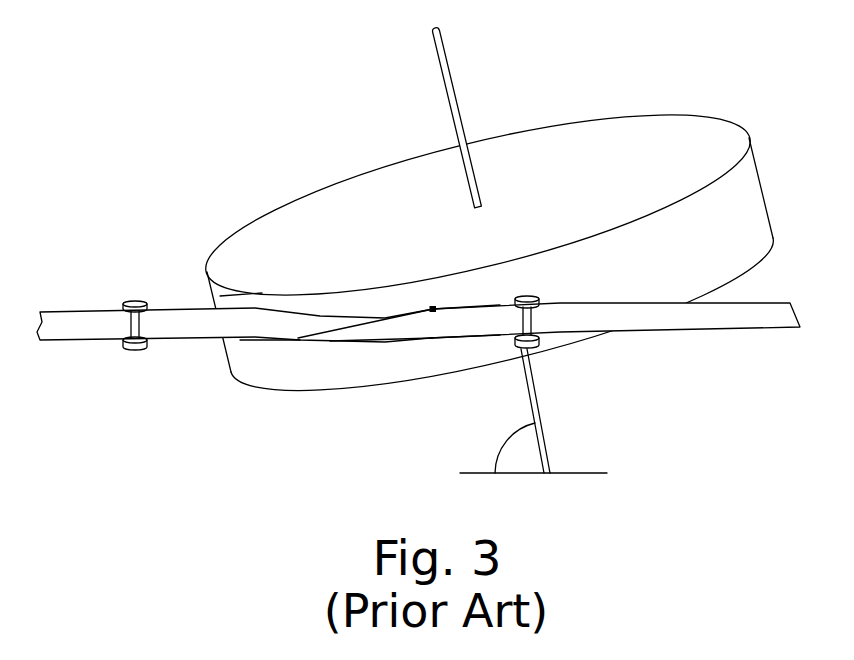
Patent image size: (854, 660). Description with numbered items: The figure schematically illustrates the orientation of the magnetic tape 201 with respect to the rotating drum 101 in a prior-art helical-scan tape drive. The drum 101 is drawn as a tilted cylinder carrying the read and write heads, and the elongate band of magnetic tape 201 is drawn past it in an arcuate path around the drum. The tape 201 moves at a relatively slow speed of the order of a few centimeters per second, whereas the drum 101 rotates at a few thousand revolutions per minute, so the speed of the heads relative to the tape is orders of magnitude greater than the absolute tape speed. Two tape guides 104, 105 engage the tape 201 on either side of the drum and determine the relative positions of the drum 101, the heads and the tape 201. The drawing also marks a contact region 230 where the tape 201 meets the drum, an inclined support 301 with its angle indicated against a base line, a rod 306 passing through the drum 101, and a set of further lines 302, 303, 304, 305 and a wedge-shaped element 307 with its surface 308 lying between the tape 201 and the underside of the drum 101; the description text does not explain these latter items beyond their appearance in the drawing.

The rotating drum 101 is at (702, 135).
The magnetic tape 201 is at (757, 320).
The tape guide 104 is at (137, 302).
The tape guide 105 is at (533, 297).
The contact point 230 is at (431, 308).
The support leg / inclination angle 301 is at (503, 463).
The lower left member 302 is at (262, 340).
The lower right member 303 is at (463, 335).
The upper right member 304 is at (463, 335).
The upper left member 305 is at (262, 340).
The rod 306 is at (448, 45).
The wedge 307 is at (354, 340).
The wedge surface 308 is at (380, 328).